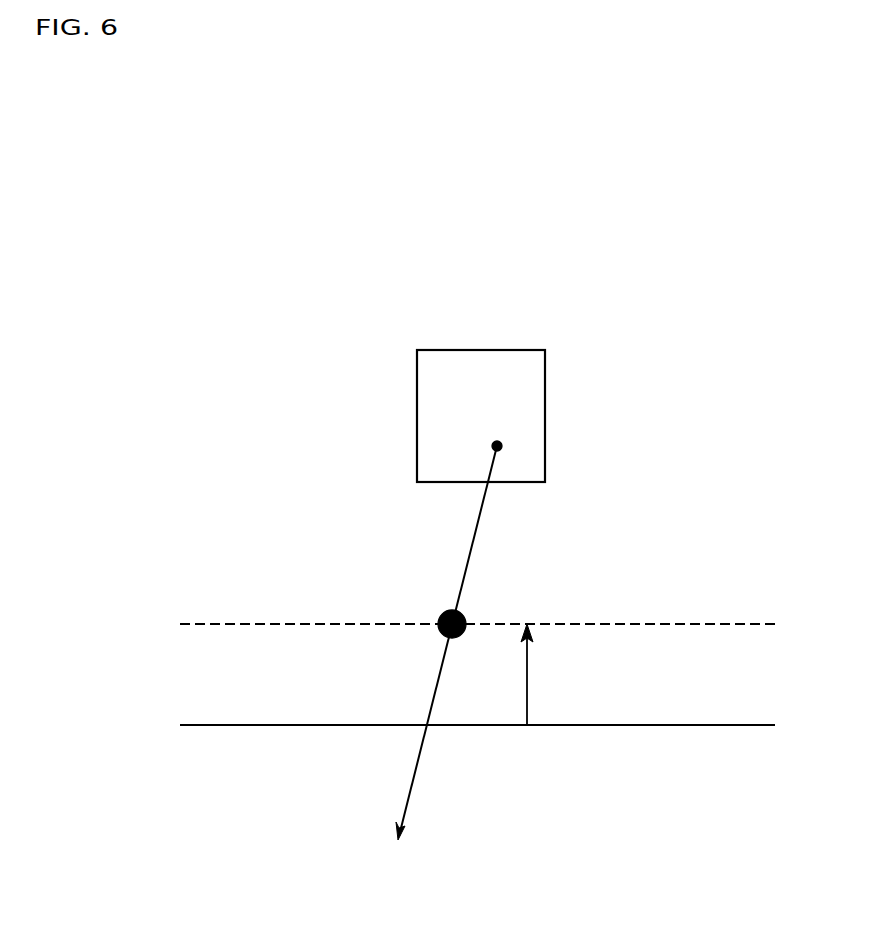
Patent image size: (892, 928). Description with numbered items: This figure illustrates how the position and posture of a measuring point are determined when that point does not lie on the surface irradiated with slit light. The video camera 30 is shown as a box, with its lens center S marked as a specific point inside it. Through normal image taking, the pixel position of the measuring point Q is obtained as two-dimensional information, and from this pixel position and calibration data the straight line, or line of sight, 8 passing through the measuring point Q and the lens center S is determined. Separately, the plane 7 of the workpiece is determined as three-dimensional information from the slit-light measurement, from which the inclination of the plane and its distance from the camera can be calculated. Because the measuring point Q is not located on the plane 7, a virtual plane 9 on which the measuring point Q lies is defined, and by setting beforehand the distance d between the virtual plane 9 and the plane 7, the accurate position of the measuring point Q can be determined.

The video camera 30 is at (583, 350).
The lens center S is at (502, 445).
The straight line (line of sight) 8 is at (483, 515).
The measuring point Q is at (437, 602).
The plane (virtual plane) 9 is at (735, 622).
The plane of the workpiece 7 is at (257, 727).
The distance d is at (535, 674).